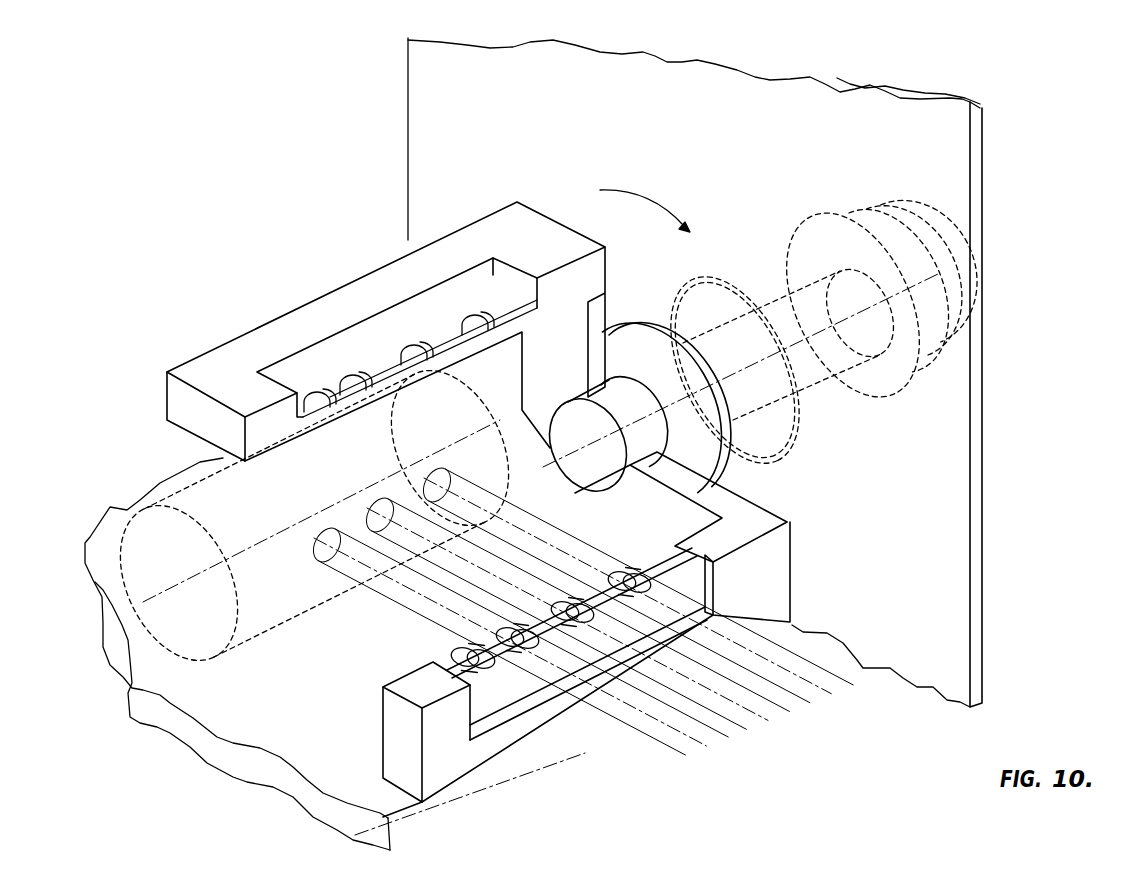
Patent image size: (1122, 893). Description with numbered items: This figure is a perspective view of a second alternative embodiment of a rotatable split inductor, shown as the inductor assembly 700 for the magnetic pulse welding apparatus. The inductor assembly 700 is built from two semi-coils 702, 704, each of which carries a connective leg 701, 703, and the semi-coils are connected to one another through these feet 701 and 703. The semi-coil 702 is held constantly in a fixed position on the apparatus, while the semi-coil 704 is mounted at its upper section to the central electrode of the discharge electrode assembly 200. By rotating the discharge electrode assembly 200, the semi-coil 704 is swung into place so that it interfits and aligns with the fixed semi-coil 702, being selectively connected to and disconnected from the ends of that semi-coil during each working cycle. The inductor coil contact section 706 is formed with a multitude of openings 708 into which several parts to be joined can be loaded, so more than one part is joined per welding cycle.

The discharge electrode assembly 200 is at (809, 210).
The inductor assembly 700 is at (552, 770).
The connective leg 701 is at (722, 500).
The semi-coil 702 is at (780, 581).
The connective leg 703 is at (596, 325).
The semi-coil 704 is at (548, 243).
The inductor coil contact section 706 is at (388, 348).
The openings 708 is at (476, 327).